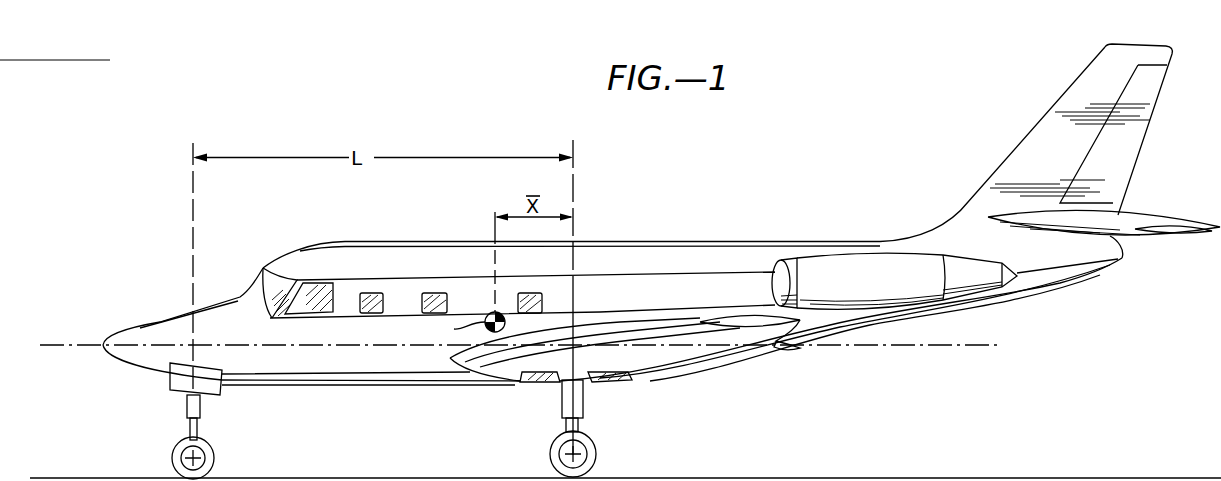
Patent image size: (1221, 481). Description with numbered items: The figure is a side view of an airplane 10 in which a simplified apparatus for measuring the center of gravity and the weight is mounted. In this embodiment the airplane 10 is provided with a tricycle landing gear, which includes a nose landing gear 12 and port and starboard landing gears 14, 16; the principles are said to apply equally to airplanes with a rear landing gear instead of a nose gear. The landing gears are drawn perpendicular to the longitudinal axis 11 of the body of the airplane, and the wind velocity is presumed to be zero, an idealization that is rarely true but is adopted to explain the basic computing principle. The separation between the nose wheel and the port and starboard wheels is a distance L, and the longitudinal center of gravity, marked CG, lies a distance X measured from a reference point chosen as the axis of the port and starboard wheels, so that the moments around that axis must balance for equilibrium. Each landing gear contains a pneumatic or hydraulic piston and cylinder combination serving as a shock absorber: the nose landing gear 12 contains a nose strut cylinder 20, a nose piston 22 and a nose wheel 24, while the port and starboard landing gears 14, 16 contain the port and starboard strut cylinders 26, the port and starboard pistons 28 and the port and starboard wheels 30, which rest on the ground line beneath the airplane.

The airplane 10 is at (650, 236).
The longitudinal axis 11 is at (53, 345).
The nose landing gear 12 is at (180, 410).
The port landing gear 14 is at (590, 407).
The starboard landing gear 16 is at (550, 428).
The nose strut cylinder 20 is at (200, 406).
The nose piston 22 is at (197, 428).
The nose wheel 24 is at (212, 451).
The port and starboard strut cylinders 26 is at (562, 398).
The port and starboard pistons 28 is at (566, 426).
The port and starboard wheels 30 is at (549, 448).